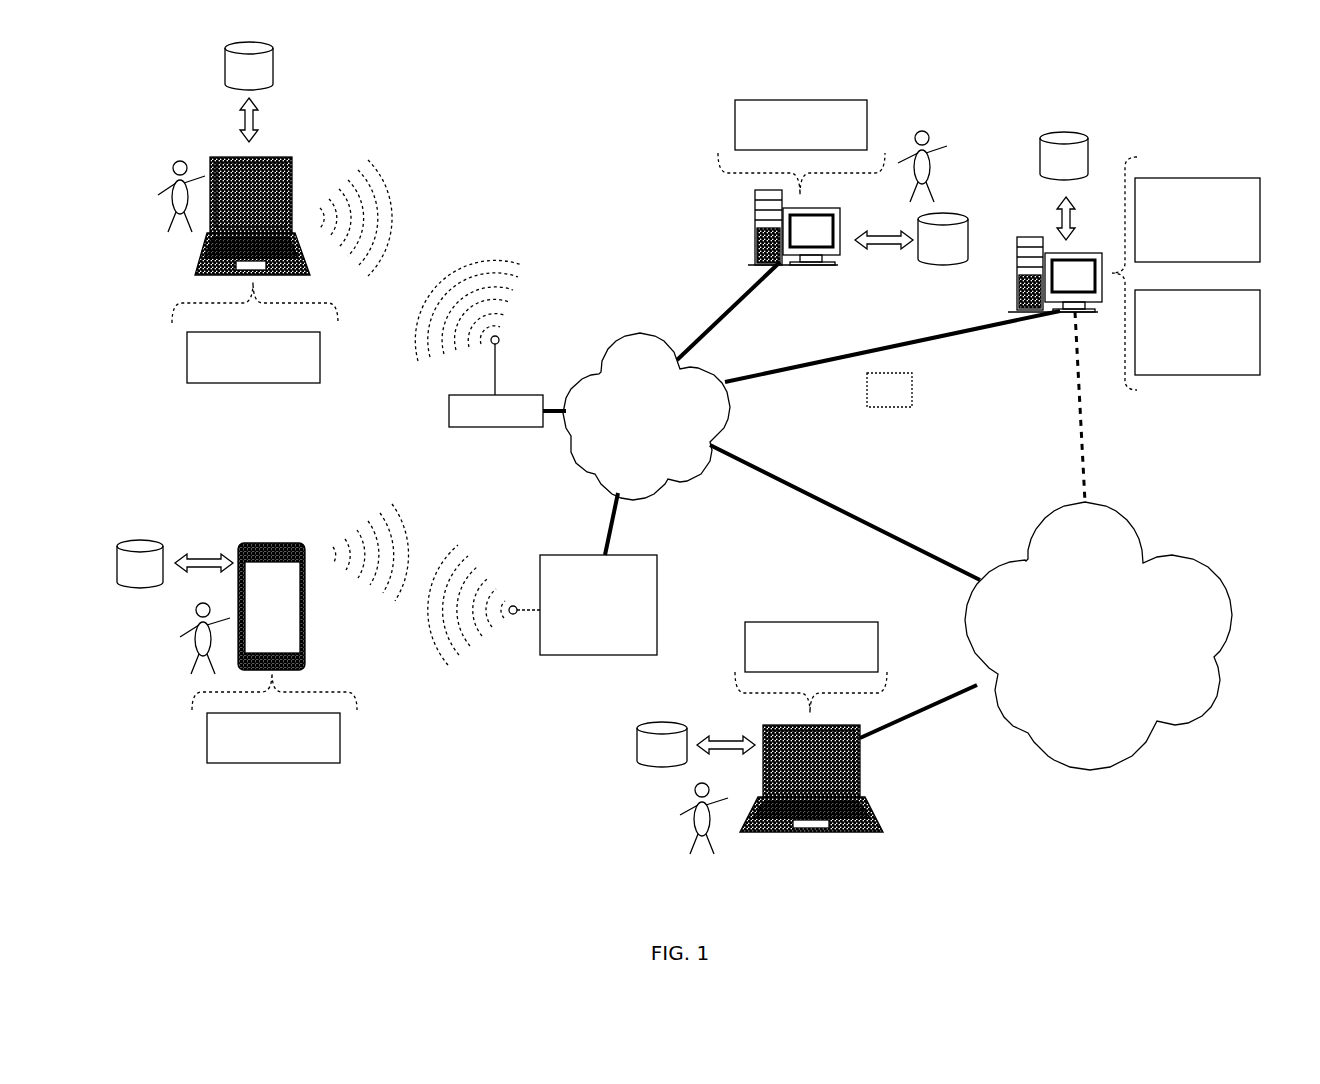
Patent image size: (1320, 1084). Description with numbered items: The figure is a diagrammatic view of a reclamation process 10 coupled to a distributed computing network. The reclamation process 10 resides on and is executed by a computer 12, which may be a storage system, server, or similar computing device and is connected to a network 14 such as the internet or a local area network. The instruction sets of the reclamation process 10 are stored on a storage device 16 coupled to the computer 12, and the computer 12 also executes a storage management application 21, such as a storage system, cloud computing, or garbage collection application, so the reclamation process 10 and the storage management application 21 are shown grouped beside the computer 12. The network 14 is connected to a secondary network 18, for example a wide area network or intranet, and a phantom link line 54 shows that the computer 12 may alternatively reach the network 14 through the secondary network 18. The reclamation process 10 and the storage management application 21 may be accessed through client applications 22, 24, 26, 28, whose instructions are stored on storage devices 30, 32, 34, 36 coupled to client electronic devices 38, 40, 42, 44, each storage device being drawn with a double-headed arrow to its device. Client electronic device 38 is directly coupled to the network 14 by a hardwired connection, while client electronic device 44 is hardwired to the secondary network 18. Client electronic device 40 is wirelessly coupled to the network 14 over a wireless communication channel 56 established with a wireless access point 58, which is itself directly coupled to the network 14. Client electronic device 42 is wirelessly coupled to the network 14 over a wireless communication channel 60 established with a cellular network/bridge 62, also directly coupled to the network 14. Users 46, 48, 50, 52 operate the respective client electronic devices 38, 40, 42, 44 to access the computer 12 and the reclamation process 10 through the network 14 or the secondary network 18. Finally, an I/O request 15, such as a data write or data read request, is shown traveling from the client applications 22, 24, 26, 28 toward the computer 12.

The reclamation process 10 is at (1260, 208).
The computer 12 is at (1017, 255).
The network 14 is at (646, 416).
The I/O request 15 is at (867, 390).
The storage device 16 is at (1064, 156).
The secondary network 18 is at (1098, 636).
The storage management application 21 is at (1260, 323).
The client application 22 is at (867, 128).
The client application 24 is at (320, 365).
The client application 26 is at (340, 730).
The client application 28 is at (878, 645).
The storage device 30 is at (943, 239).
The storage device 32 is at (249, 66).
The storage device 34 is at (140, 564).
The storage device 36 is at (662, 744).
The client electronic device 38 is at (745, 216).
The client electronic device 40 is at (290, 180).
The client electronic device 42 is at (305, 590).
The client electronic device 44 is at (860, 770).
The user 46 is at (943, 143).
The user 48 is at (145, 188).
The user 50 is at (180, 618).
The user 52 is at (665, 808).
The phantom link line 54 is at (1052, 383).
The wireless communication channel 56 is at (437, 232).
The wireless access point (WAP) 58 is at (443, 409).
The wireless communication channel 60 is at (427, 557).
The cellular network/bridge 62 is at (657, 572).